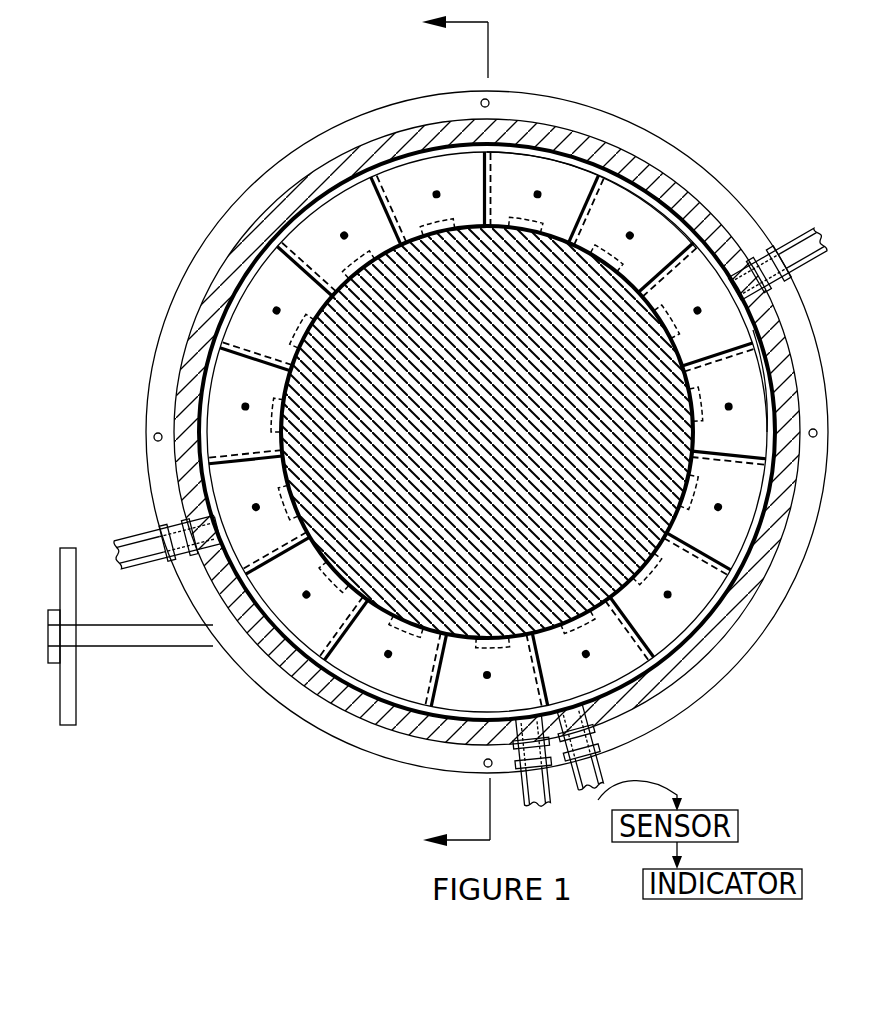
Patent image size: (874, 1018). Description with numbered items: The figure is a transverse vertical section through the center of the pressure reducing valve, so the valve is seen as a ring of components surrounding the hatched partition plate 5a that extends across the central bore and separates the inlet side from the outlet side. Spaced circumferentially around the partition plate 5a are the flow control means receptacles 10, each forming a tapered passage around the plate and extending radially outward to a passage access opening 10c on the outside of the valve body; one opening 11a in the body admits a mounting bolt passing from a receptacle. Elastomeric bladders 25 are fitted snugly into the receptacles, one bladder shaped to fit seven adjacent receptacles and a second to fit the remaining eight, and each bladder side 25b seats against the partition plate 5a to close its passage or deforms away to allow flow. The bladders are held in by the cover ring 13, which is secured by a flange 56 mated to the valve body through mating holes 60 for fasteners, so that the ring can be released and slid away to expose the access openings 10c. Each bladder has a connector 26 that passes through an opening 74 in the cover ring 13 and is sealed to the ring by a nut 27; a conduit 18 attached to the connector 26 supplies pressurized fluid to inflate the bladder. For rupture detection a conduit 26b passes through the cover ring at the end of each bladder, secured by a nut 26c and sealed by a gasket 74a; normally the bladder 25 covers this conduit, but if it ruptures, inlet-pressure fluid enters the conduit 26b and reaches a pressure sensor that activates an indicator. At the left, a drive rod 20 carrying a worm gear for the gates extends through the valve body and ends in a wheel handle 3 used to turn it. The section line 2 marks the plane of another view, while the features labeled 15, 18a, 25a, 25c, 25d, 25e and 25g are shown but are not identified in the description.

The section line 2- 2 is at (442, 432).
The wheel handle 3 is at (74, 712).
The partition plate 5a is at (526, 566).
The flow control means receptacle 10 is at (455, 737).
The passage access opening 10c is at (190, 417).
The opening 11a is at (676, 598).
The cover ring 13 is at (397, 142).
The sensing element recess 15 is at (458, 214).
The conduit 18 is at (828, 232).
The nozzle pipe 18a is at (572, 780).
The drive rod 20 is at (120, 636).
The elastomeric bladder 25 is at (622, 166).
The refractory brick 25a is at (492, 193).
The bladder side 25b is at (633, 274).
The refractory brick 25c is at (700, 381).
The brick flange portion 25d is at (750, 252).
The brick flange portion 25e is at (772, 291).
The brick outer portion 25g is at (776, 330).
The connector 26 is at (740, 284).
The conduit 26b is at (513, 752).
The nut 26c is at (596, 744).
The nut 27 is at (761, 240).
The flange 56 is at (342, 138).
The mating hole 60 is at (491, 103).
The opening 74 is at (210, 560).
The gasket 74a is at (473, 776).